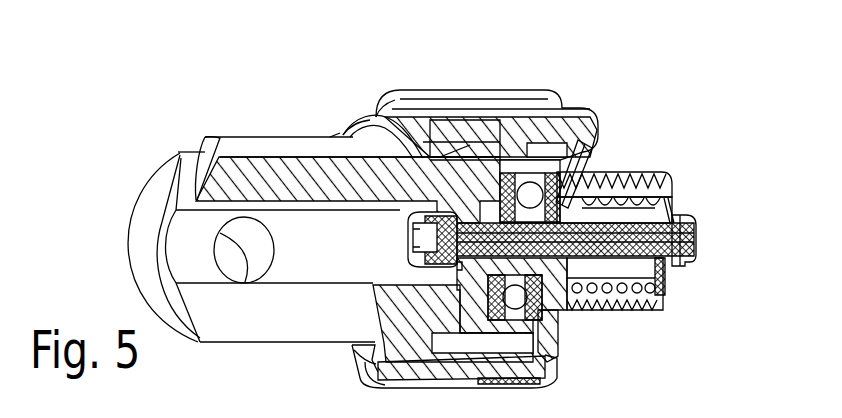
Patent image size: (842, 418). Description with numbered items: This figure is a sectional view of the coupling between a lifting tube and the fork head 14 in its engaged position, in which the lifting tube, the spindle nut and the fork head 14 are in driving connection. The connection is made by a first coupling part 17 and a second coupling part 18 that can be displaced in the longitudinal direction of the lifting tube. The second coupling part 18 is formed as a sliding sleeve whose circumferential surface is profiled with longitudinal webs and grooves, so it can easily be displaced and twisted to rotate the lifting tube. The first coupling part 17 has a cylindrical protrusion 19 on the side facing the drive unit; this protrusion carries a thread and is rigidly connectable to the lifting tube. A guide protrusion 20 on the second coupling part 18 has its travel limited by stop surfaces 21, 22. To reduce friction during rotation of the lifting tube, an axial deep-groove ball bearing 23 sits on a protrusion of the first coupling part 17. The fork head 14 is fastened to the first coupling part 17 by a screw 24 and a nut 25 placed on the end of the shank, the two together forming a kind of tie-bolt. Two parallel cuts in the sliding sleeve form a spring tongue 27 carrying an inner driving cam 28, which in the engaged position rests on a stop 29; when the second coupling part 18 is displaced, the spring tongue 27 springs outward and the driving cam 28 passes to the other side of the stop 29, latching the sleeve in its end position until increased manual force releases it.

The fork head 14 is at (237, 147).
The first coupling part 17 is at (590, 173).
The second coupling part 18 is at (410, 90).
The cylindrical protrusion 19 is at (662, 178).
The guide protrusion 20 is at (380, 110).
The stop surface 21 is at (560, 200).
The stop surface 22 is at (467, 153).
The axial deep-groove ball bearing 23 is at (507, 200).
The screw 24 is at (692, 243).
The nut 25 is at (682, 215).
The spring tongue 27 is at (373, 365).
The driving cam 28 is at (553, 362).
The stop 29 is at (553, 335).